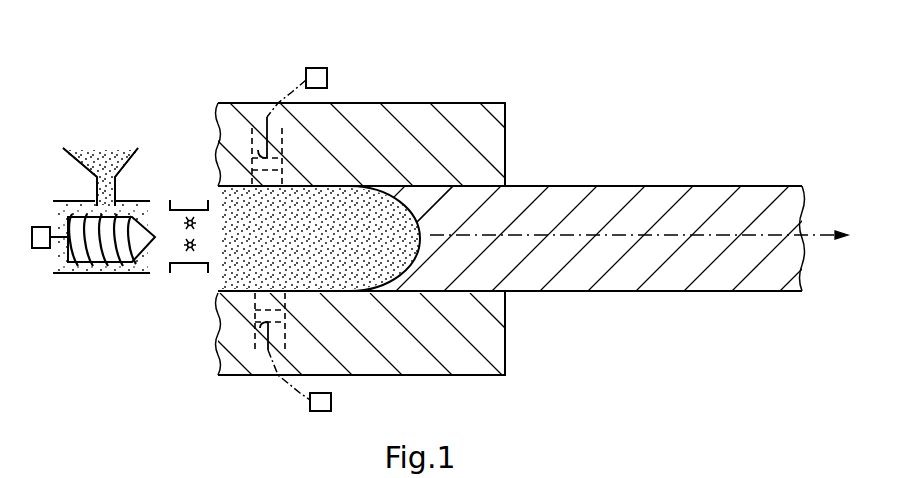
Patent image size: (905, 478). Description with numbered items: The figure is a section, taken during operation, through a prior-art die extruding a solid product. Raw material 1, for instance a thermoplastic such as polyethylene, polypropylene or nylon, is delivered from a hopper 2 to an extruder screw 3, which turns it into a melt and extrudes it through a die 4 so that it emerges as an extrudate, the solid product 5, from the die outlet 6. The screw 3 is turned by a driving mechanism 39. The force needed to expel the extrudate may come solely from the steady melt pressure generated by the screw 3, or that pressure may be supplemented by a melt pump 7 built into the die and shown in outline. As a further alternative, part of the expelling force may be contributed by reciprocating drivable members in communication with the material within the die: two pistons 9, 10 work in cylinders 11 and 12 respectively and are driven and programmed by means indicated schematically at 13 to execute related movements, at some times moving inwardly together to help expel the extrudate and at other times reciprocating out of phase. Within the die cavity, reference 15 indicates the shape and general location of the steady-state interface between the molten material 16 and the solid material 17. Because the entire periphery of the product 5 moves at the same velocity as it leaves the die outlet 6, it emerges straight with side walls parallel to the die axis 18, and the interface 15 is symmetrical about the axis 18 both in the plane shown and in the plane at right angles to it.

The raw material 1 is at (100, 150).
The hopper 2 is at (127, 163).
The extruder screw 3 is at (75, 245).
The driving mechanism 39 is at (40, 227).
The melt pump 7 is at (188, 272).
The die 4 is at (438, 94).
The die outlet 6 is at (514, 177).
The solid product 5 is at (675, 183).
The piston 9 is at (252, 142).
The cylinder 11 is at (255, 170).
The cylinder 12 is at (255, 303).
The piston 10 is at (256, 330).
The drive and programming means 13 is at (316, 68).
The melt/solid interface 15 is at (382, 195).
The molten material 16 is at (276, 247).
The solid material 17 is at (453, 257).
The die axis 18 is at (708, 237).